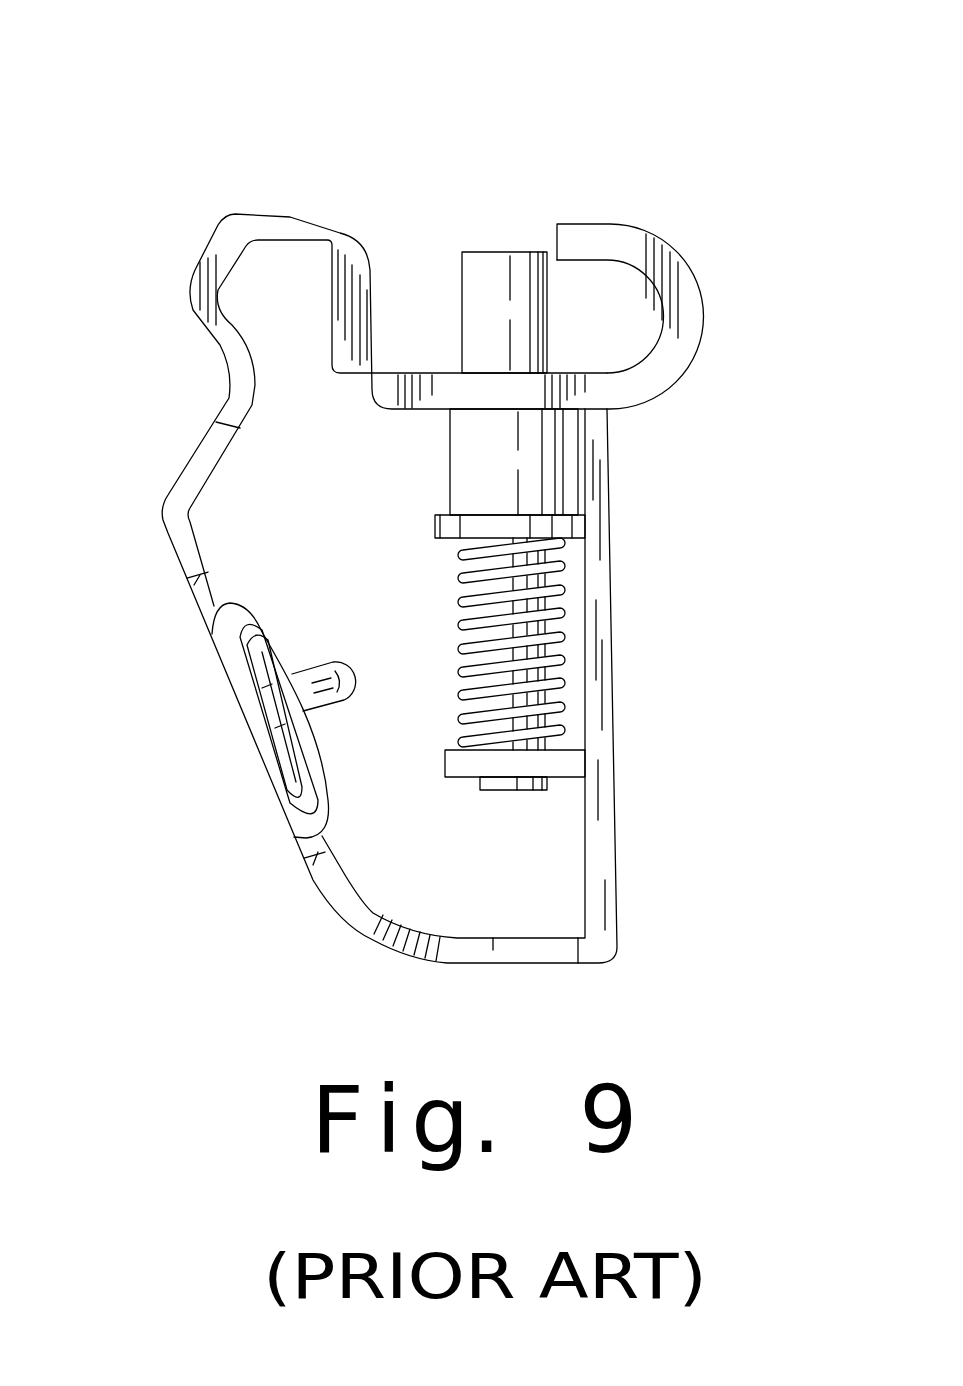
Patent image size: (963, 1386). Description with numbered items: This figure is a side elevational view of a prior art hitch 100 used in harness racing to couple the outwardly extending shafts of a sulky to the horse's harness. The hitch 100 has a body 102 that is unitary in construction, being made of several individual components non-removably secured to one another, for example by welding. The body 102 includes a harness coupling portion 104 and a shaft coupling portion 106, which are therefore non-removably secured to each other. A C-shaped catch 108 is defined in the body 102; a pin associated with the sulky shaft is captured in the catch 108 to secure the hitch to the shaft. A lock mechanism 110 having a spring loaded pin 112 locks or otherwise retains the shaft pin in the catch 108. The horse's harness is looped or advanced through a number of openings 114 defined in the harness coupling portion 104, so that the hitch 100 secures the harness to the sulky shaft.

The hitch 100 is at (655, 137).
The body 102 is at (604, 850).
The harness coupling portion 104 is at (220, 658).
The shaft coupling portion 106 is at (597, 533).
The C-shaped catch 108 is at (665, 258).
The lock mechanism 110 is at (408, 457).
The spring loaded pin 112 is at (462, 298).
The openings 114 is at (177, 565).